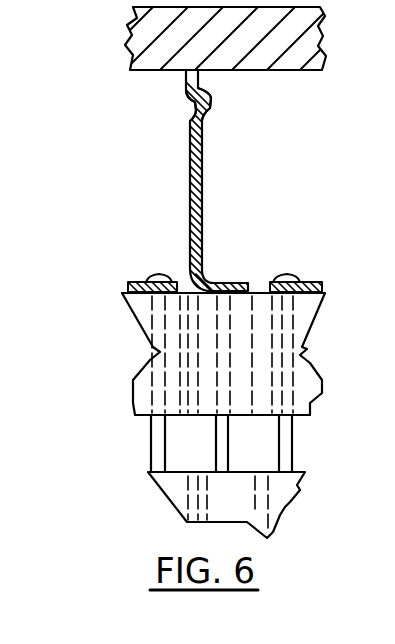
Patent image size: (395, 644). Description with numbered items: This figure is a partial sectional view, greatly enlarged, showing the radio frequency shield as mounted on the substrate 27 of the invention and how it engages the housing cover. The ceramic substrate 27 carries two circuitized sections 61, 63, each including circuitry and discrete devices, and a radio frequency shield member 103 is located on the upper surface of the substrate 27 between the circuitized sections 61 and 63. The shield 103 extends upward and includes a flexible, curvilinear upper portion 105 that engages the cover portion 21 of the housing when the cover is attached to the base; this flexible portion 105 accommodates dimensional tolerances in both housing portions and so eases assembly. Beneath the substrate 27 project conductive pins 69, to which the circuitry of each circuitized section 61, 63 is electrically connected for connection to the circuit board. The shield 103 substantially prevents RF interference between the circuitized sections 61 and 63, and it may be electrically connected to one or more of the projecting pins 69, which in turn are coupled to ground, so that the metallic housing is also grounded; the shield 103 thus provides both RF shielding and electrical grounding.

The cover portion 21 is at (122, 24).
The substrate 27 is at (115, 310).
The circuitized section 61 is at (289, 258).
The circuitized section 63 is at (162, 250).
The conductive pins 69 is at (140, 440).
The radio frequency shield member 103 is at (180, 172).
The flexible upper portion 105 is at (212, 97).